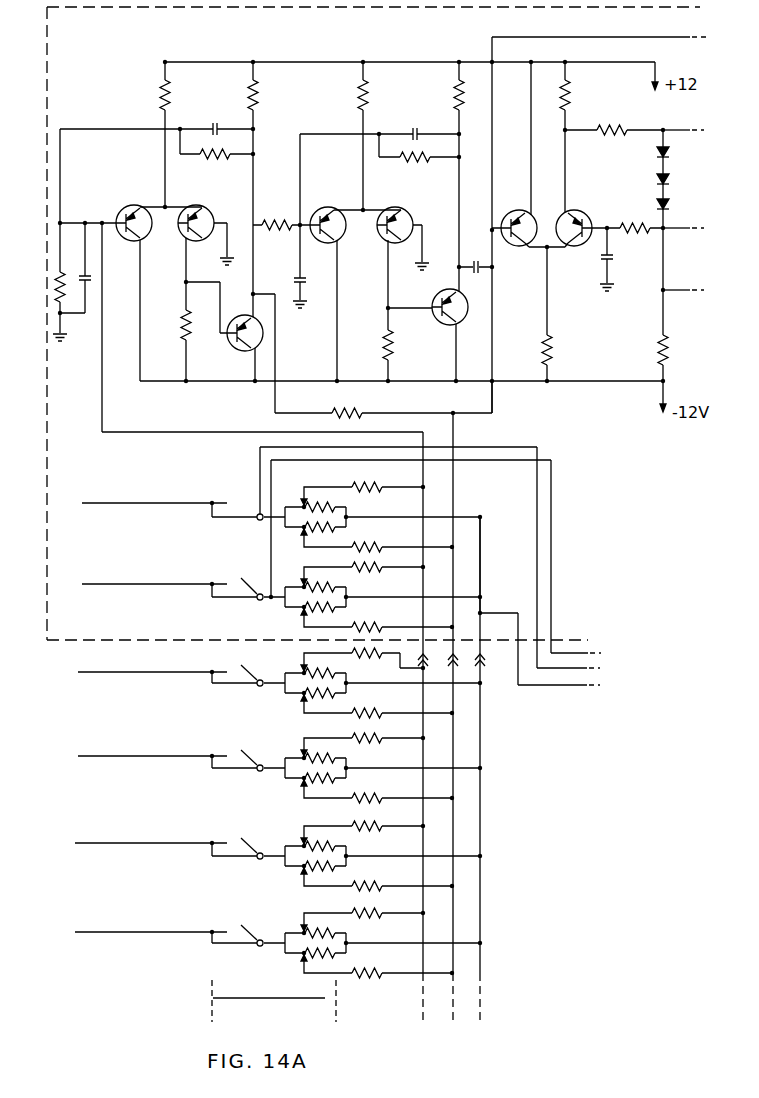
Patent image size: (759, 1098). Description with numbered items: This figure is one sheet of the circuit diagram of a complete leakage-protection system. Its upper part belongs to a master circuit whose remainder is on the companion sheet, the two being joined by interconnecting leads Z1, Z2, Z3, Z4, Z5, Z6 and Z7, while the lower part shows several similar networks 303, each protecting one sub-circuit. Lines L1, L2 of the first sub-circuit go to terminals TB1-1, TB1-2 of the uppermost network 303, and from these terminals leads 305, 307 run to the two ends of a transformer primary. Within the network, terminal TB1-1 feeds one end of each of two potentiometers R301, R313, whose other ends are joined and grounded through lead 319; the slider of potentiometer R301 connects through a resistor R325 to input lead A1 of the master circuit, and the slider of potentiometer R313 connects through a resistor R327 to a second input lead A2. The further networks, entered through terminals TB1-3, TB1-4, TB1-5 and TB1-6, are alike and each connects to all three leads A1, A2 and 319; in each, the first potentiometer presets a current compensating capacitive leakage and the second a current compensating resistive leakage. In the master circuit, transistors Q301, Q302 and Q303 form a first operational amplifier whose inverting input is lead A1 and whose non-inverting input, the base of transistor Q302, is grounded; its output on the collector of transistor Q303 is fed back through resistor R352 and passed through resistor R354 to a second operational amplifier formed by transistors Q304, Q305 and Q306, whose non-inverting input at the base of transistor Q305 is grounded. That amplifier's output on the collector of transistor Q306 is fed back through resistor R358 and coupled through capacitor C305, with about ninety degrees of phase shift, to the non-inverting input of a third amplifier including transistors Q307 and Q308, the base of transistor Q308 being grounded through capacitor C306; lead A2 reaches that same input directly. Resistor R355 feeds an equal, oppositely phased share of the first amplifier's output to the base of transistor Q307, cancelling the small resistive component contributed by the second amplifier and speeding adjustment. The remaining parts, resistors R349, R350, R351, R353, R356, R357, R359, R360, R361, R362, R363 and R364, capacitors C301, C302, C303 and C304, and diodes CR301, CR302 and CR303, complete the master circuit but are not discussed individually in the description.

The interconnecting lead Z1 is at (690, 36).
The interconnecting lead Z2 is at (700, 130).
The interconnecting lead Z3 is at (688, 228).
The interconnecting lead Z4 is at (688, 290).
The interconnecting lead Z5 is at (589, 651).
The interconnecting lead Z6 is at (585, 667).
The interconnecting lead Z7 is at (588, 683).
The input lead A1 is at (263, 436).
The second input lead A2 is at (474, 416).
The line L1 is at (84, 503).
The line L2 is at (114, 583).
The resistor R349 is at (68, 284).
The resistor R350 is at (162, 93).
The resistor R351 is at (186, 329).
The resistor R352 is at (228, 156).
The resistor R353 is at (251, 93).
The resistor R354 is at (271, 218).
The resistor R355 is at (342, 411).
The resistor R356 is at (361, 93).
The resistor R357 is at (384, 342).
The resistor R358 is at (432, 159).
The resistor R359 is at (456, 92).
The resistor R360 is at (550, 348).
The resistor R361 is at (570, 103).
The resistor R362 is at (620, 120).
The resistor R363 is at (630, 234).
The resistor R364 is at (657, 343).
The capacitor C301 is at (90, 275).
The capacitor C302 is at (212, 129).
The capacitor C303 is at (292, 281).
The capacitor C304 is at (412, 131).
The capacitor C305 is at (481, 271).
The capacitor C306 is at (612, 260).
The transistor Q301 is at (141, 207).
The transistor Q302 is at (214, 197).
The transistor Q303 is at (237, 348).
The transistor Q304 is at (349, 203).
The transistor Q305 is at (408, 212).
The transistor Q306 is at (436, 318).
The transistor Q307 is at (537, 249).
The transistor Q308 is at (578, 249).
The diode CR301 is at (657, 154).
The diode CR302 is at (657, 181).
The diode CR303 is at (657, 205).
The terminal TB1-1 is at (349, 515).
The terminal TB1-2 is at (345, 594).
The terminal board connection TB1-3 is at (344, 682).
The terminal board connection TB1-4 is at (342, 763).
The terminal board connection TB1-5 is at (344, 852).
The terminal board connection TB1-6 is at (342, 941).
The potentiometer R301 is at (322, 505).
The potentiometer R313 is at (324, 529).
The resistor R325 is at (364, 486).
The resistor R327 is at (372, 546).
The network 303 is at (274, 1010).
The lead 305 is at (526, 687).
The lead 307 is at (566, 652).
The lead 319 is at (484, 561).